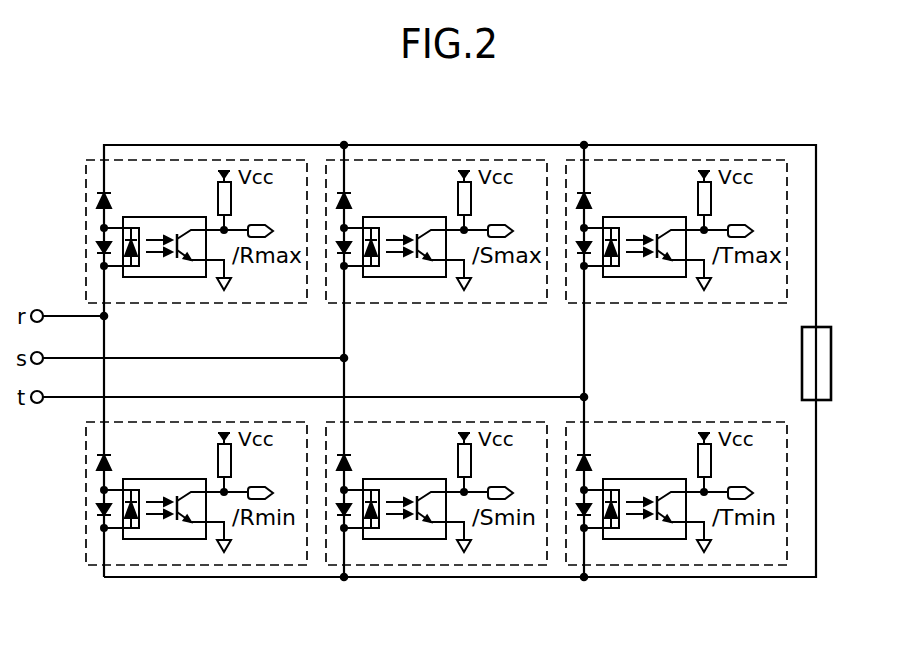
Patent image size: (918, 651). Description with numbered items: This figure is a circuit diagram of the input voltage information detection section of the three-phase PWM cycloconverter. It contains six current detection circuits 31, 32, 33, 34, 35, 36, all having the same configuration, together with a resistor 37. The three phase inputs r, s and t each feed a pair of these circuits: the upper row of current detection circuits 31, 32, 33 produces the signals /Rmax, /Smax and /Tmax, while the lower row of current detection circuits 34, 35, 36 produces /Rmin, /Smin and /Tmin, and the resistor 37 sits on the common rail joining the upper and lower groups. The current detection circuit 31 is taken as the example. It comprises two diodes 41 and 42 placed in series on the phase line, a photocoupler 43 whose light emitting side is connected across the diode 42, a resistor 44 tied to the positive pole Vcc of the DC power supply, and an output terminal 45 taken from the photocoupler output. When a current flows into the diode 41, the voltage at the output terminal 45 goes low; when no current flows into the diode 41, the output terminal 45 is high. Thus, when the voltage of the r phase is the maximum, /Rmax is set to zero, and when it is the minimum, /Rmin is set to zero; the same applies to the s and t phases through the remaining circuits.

The current detection circuit 31 is at (158, 160).
The current detection circuit 32 is at (407, 160).
The current detection circuit 33 is at (663, 160).
The current detection circuit 34 is at (133, 566).
The current detection circuit 35 is at (378, 566).
The current detection circuit 36 is at (617, 566).
The resistor 37 is at (831, 362).
The diode 41 is at (97, 200).
The diode 42 is at (97, 248).
The photocoupler 43 is at (151, 217).
The resistor 44 is at (217, 205).
The output terminal 45 is at (273, 228).